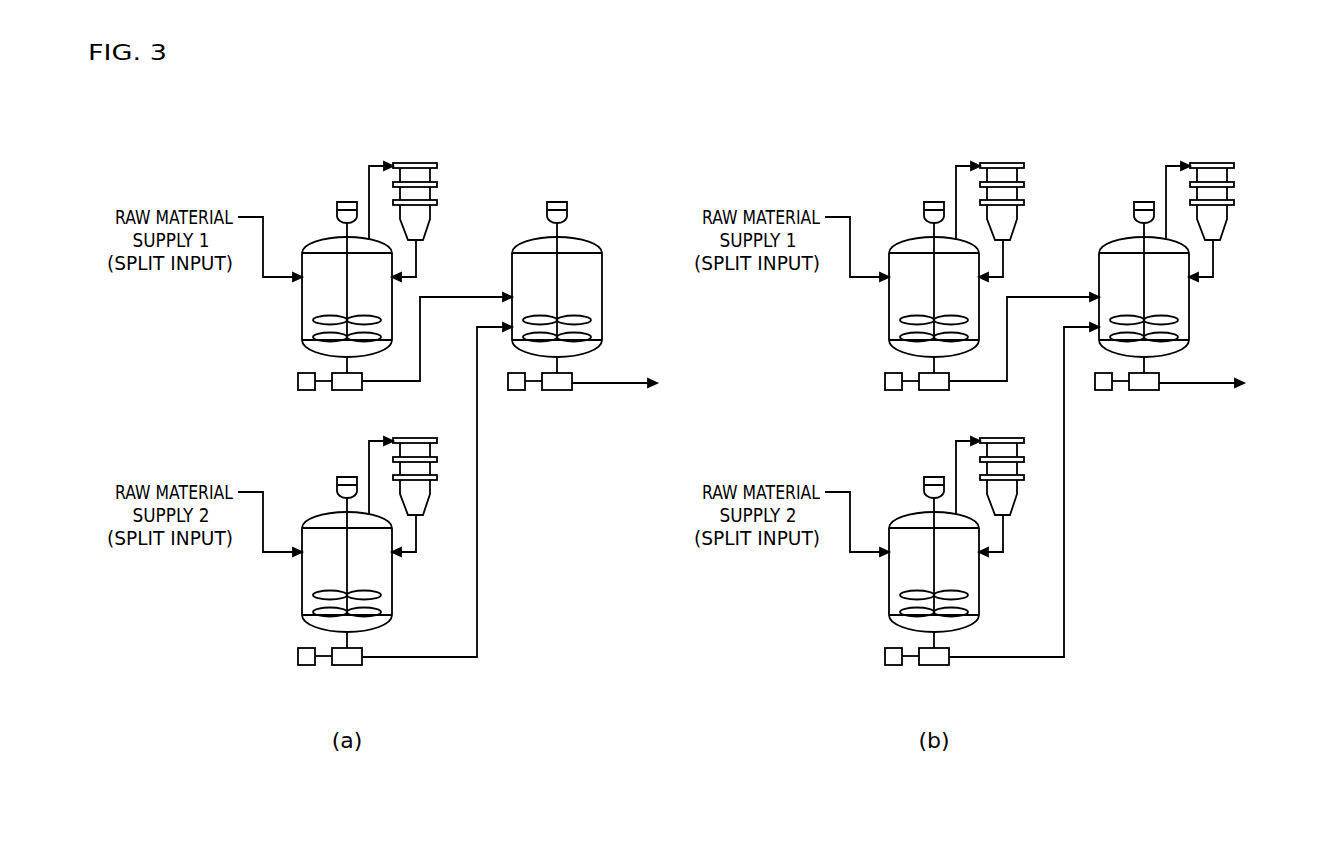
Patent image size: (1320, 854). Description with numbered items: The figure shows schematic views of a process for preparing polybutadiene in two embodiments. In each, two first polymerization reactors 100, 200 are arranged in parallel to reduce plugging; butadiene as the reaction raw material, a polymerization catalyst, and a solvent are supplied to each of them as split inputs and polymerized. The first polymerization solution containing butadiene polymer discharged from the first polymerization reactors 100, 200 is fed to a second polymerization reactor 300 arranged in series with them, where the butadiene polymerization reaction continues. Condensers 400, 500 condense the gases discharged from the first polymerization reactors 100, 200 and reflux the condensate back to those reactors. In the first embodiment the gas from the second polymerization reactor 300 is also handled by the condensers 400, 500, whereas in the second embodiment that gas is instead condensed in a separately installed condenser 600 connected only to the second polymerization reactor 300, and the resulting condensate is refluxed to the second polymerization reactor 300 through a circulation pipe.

In FIG. 3A, the first polymerization reactor 100 is at (302, 325).
In FIG. 3B, the first polymerization reactor 100 is at (899, 296).
In FIG. 3A, the first polymerization reactor 200 is at (302, 600).
In FIG. 3B, the first polymerization reactor 200 is at (899, 571).
In FIG. 3A, the second polymerization reactor 300 is at (603, 322).
In FIG. 3B, the second polymerization reactor 300 is at (1175, 296).
In FIG. 3A, the condenser 400 is at (417, 163).
In FIG. 3B, the condenser 400 is at (990, 195).
In FIG. 3A, the condenser 500 is at (435, 438).
In FIG. 3B, the condenser 500 is at (1004, 471).
In FIG. 3B, the condenser 600 is at (1200, 195).